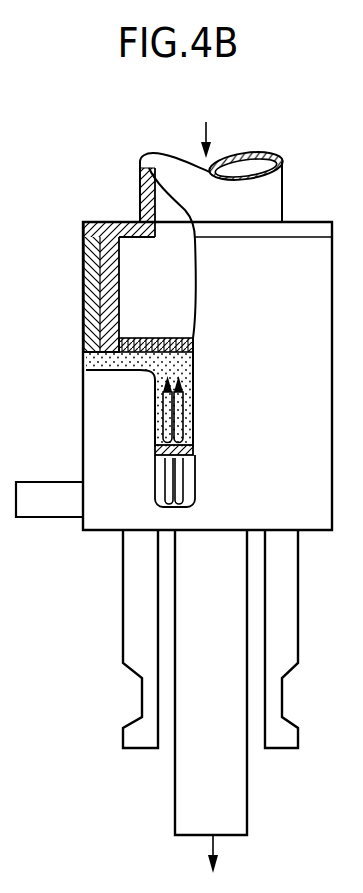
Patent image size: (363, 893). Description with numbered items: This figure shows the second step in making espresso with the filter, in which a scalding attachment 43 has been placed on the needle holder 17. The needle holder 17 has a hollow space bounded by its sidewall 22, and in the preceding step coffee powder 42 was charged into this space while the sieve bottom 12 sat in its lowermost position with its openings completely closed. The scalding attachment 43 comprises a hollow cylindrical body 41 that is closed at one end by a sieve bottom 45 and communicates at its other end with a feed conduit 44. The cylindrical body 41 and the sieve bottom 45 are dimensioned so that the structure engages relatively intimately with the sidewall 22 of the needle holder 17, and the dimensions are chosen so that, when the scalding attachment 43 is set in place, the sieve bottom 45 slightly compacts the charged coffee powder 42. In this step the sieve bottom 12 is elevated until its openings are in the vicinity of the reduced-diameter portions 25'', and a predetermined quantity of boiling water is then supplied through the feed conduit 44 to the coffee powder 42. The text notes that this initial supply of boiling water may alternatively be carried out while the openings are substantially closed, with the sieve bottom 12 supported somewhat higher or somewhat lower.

The feed conduit 44 is at (168, 165).
The scalding attachment 43 is at (130, 197).
The hollow cylindrical body 41 is at (110, 283).
The sidewall 22 is at (103, 312).
The sieve bottom 45 is at (141, 328).
The coffee powder 42 is at (123, 360).
The needle holder 17 is at (97, 405).
The sieve bottom 12 is at (152, 447).
The reduced-diameter portions 25'' is at (129, 515).